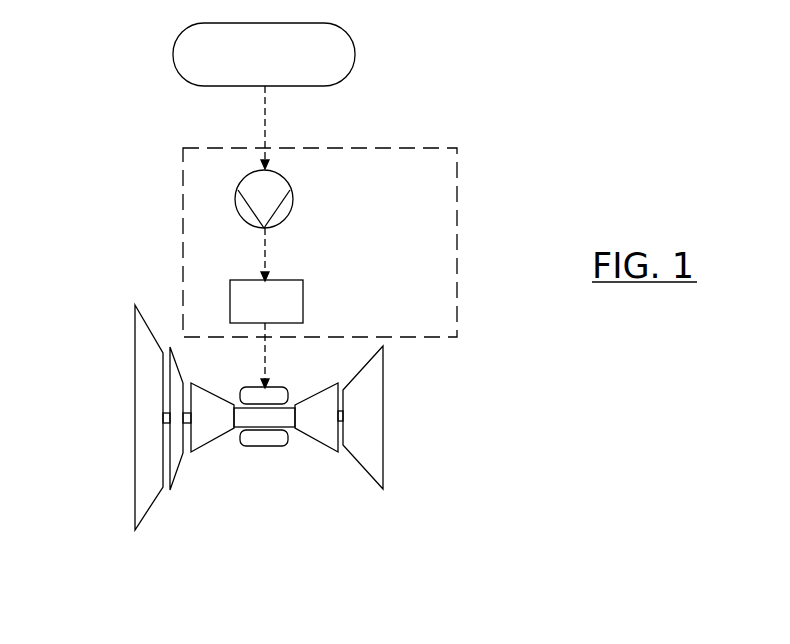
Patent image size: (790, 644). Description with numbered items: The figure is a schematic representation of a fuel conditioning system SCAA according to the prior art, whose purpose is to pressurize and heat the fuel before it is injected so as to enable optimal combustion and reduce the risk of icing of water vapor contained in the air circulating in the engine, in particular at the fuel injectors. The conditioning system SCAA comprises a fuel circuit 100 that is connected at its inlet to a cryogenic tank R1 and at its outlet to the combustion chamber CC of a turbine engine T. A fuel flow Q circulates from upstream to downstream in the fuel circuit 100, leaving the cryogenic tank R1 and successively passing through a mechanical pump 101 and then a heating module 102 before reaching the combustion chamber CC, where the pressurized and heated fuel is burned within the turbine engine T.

The cryogenic tank R1 is at (355, 55).
The fuel circuit 100 is at (265, 120).
The conditioning system SCAA is at (457, 167).
The mechanical pump 101 is at (292, 205).
The heating module 102 is at (303, 300).
The turbine engine T is at (105, 367).
The combustion chamber CC is at (258, 446).